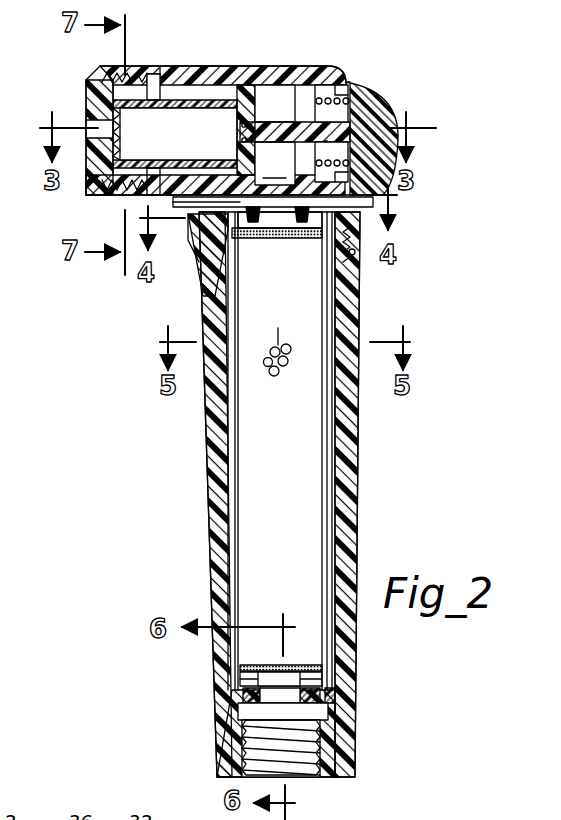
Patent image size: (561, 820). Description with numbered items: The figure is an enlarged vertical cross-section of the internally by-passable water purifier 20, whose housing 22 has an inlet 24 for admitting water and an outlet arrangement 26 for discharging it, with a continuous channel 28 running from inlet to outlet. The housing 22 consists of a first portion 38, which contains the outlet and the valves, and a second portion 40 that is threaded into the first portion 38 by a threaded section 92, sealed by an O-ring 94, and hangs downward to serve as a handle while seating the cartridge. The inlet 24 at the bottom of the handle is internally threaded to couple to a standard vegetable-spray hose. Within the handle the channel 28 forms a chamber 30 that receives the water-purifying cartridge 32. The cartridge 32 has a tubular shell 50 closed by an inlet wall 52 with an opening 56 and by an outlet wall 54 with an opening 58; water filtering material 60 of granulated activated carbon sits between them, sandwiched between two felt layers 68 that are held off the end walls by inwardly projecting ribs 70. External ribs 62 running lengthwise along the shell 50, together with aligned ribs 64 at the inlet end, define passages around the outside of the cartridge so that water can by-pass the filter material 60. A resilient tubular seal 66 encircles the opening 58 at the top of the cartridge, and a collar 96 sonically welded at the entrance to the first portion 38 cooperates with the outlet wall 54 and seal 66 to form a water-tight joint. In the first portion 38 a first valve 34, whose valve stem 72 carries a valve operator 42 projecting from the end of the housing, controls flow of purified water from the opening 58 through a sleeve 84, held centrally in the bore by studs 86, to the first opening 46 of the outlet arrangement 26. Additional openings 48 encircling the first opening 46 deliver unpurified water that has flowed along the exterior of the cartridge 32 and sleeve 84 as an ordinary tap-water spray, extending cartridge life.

The internally by-passable water purifier 20 is at (202, 420).
The housing 22 is at (291, 63).
The inlet 24 is at (308, 773).
The outlet arrangement 26 is at (83, 125).
The continuous channel 28 is at (275, 163).
The chamber 30 is at (333, 455).
The water-purifying cartridge 32 is at (332, 467).
The first valve 34 is at (368, 80).
The first portion 38 is at (230, 70).
The second portion 40 is at (352, 428).
The valve operator 42 is at (398, 182).
The first opening 46 is at (118, 132).
The additional opening 48 is at (93, 90).
The tubular shell 50 is at (233, 462).
The inlet wall 52 is at (328, 700).
The outlet wall 54 is at (365, 248).
The opening 56 is at (265, 690).
The opening 58 is at (278, 216).
The water filtering material 60 is at (280, 376).
The ribs 62 is at (335, 520).
The ribs 64 is at (350, 727).
The tubular seal 66 is at (268, 228).
The layers of fibrous sheet 68 is at (323, 240).
The ribs 70 is at (362, 296).
The valve stem 72 is at (266, 130).
The sleeve 84 is at (193, 99).
The studs 86 is at (153, 72).
The threaded section 92 is at (190, 226).
The O-ring 94 is at (203, 262).
The collar 96 is at (392, 244).